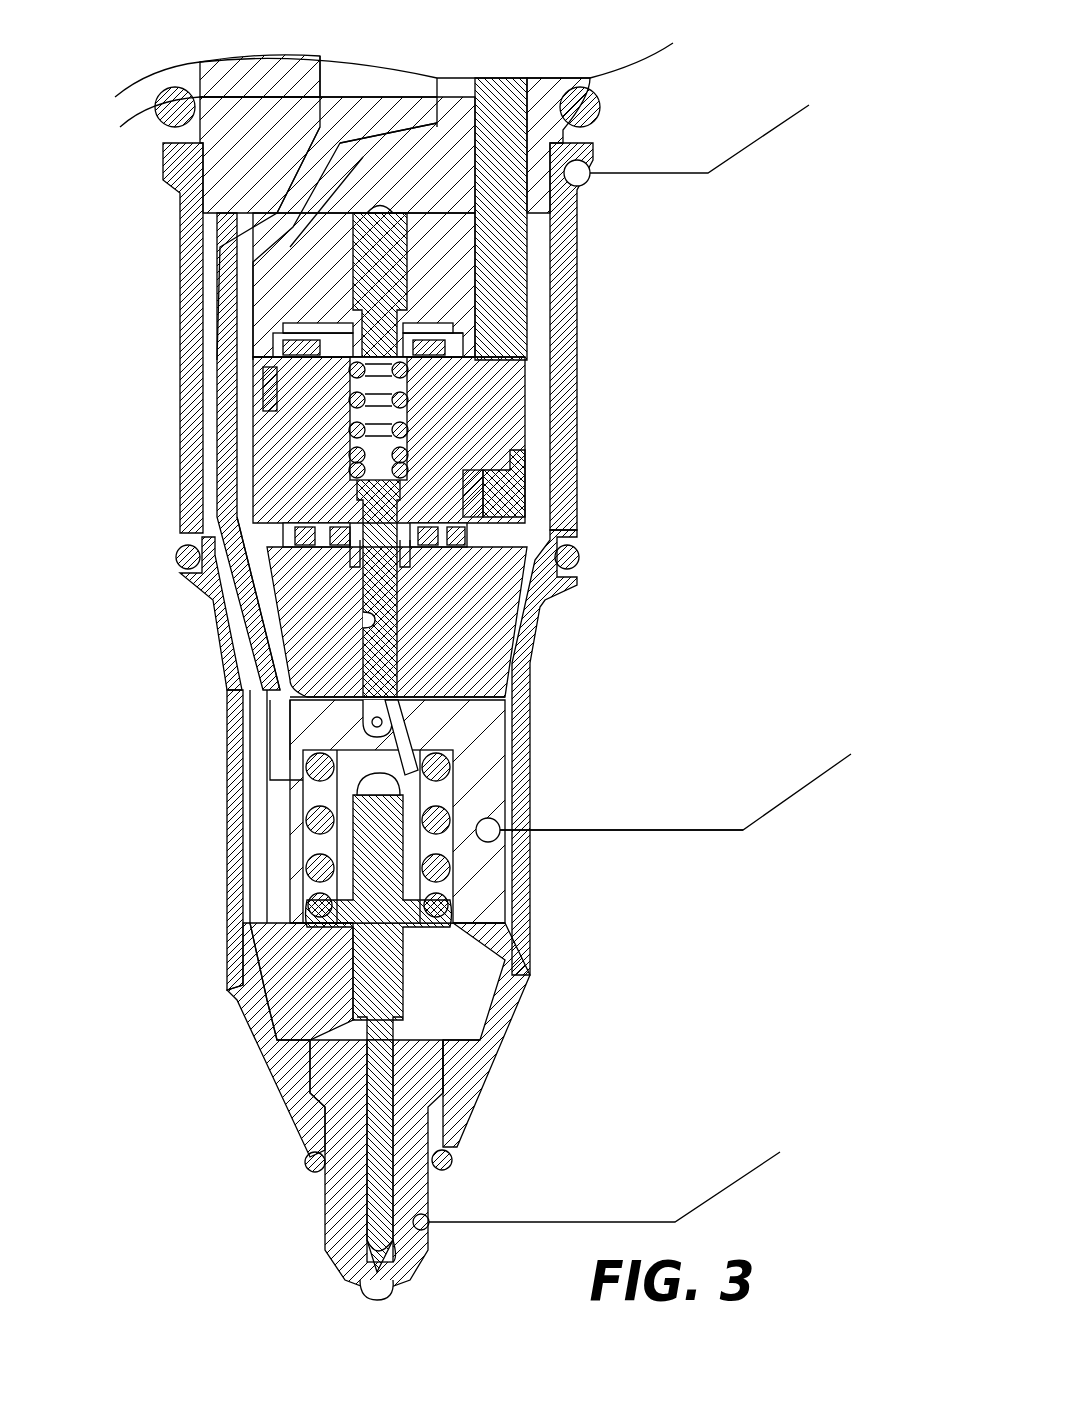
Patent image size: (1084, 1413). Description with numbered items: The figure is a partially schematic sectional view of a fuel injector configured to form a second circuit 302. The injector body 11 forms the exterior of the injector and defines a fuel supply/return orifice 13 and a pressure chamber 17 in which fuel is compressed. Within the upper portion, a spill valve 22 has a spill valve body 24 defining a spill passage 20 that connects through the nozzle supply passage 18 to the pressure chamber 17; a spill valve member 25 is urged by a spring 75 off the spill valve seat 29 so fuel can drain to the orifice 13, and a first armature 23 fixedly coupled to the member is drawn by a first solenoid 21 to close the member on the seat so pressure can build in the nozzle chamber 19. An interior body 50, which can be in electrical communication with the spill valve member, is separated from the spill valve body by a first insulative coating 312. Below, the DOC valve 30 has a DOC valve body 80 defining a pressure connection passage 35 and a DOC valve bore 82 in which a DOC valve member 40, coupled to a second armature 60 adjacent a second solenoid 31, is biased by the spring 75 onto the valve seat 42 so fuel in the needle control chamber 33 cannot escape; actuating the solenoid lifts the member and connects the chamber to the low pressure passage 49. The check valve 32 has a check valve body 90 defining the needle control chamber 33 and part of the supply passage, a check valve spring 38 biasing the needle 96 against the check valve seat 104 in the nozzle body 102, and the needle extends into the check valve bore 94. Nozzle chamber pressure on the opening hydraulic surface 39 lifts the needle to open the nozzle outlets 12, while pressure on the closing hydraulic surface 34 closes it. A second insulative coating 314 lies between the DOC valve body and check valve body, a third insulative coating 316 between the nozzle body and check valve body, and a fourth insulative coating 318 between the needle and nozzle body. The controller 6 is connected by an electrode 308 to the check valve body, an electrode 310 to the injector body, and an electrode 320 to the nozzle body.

The controller 6 is at (695, 647).
The injector body 11 is at (180, 370).
The nozzle outlets 12 is at (377, 1277).
The fuel supply/return orifice 13 is at (553, 375).
The pressure chamber 17 is at (158, 104).
The nozzle supply passage 18 is at (272, 818).
The nozzle chamber 19 is at (490, 1050).
The spill passage 20 is at (480, 345).
The first solenoid 21 is at (265, 400).
The spill valve 22 is at (480, 282).
The first armature 23 is at (310, 350).
The spill valve body 24 is at (458, 300).
The spill valve member 25 is at (367, 253).
The spill valve seat 29 is at (340, 275).
The DOC valve 30 is at (484, 563).
The second solenoid 31 is at (513, 463).
The check valve 32 is at (517, 980).
The needle control chamber 33 is at (355, 788).
The closing hydraulic surface 34 is at (395, 790).
The pressure connection passage 35 is at (330, 665).
The check valve spring 38 is at (317, 867).
The opening hydraulic surface 39 is at (390, 1037).
The DOC valve member 40 is at (480, 512).
The valve seat 42 is at (393, 697).
The low pressure passage 49 is at (445, 722).
The interior body 50 is at (452, 98).
The second armature 60 is at (353, 537).
The spring 75 is at (407, 430).
The DOC valve body 80 is at (470, 658).
The DOC valve bore 82 is at (368, 622).
The check valve body 90 is at (487, 872).
The check valve bore 94 is at (397, 1197).
The needle 96 is at (390, 947).
The nozzle body 102 is at (443, 1063).
The check valve seat 104 is at (394, 1245).
The second circuit 302 is at (682, 334).
The electrode 308 is at (716, 830).
The electrode 310 is at (641, 172).
The first insulative coating 312 is at (463, 230).
The second insulative coating 314 is at (385, 722).
The third insulative coating 316 is at (530, 950).
The fourth insulative coating 318 is at (450, 1043).
The electrode 320 is at (545, 1222).